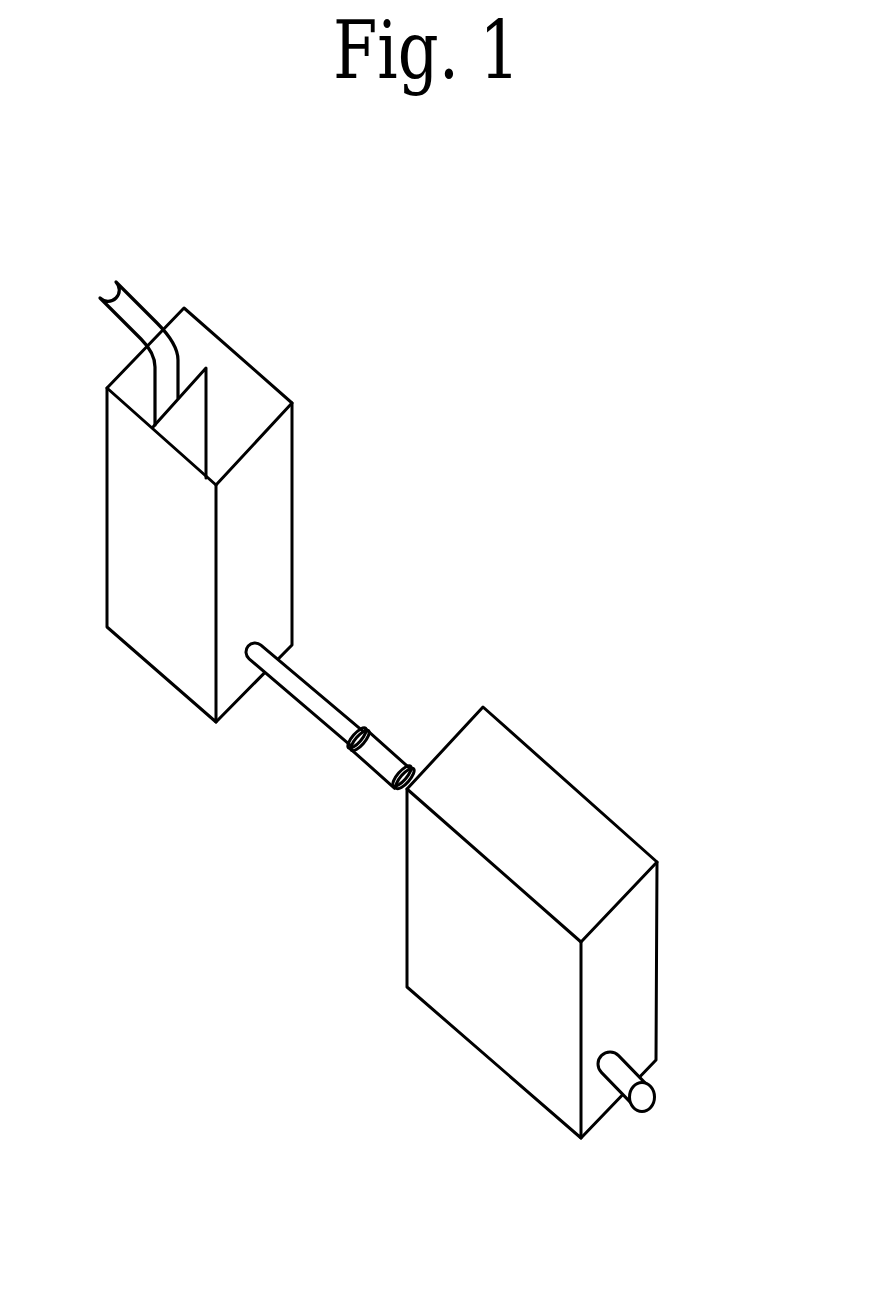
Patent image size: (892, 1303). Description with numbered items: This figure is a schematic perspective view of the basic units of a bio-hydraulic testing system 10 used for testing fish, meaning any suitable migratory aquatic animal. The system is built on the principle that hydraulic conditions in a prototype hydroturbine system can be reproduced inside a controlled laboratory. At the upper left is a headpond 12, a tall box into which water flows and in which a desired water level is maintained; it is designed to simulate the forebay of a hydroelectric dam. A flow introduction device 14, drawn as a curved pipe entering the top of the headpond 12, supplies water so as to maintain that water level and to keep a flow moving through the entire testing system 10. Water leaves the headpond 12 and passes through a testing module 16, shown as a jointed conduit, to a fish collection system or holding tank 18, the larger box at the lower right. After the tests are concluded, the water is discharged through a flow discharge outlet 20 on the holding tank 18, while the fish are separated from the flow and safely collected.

The bio-hydraulic testing system 10 is at (513, 560).
The headpond 12 is at (260, 343).
The flow introduction device 14 is at (120, 300).
The testing module 16 is at (368, 760).
The holding tank 18 is at (553, 812).
The flow discharge outlet 20 is at (617, 1070).